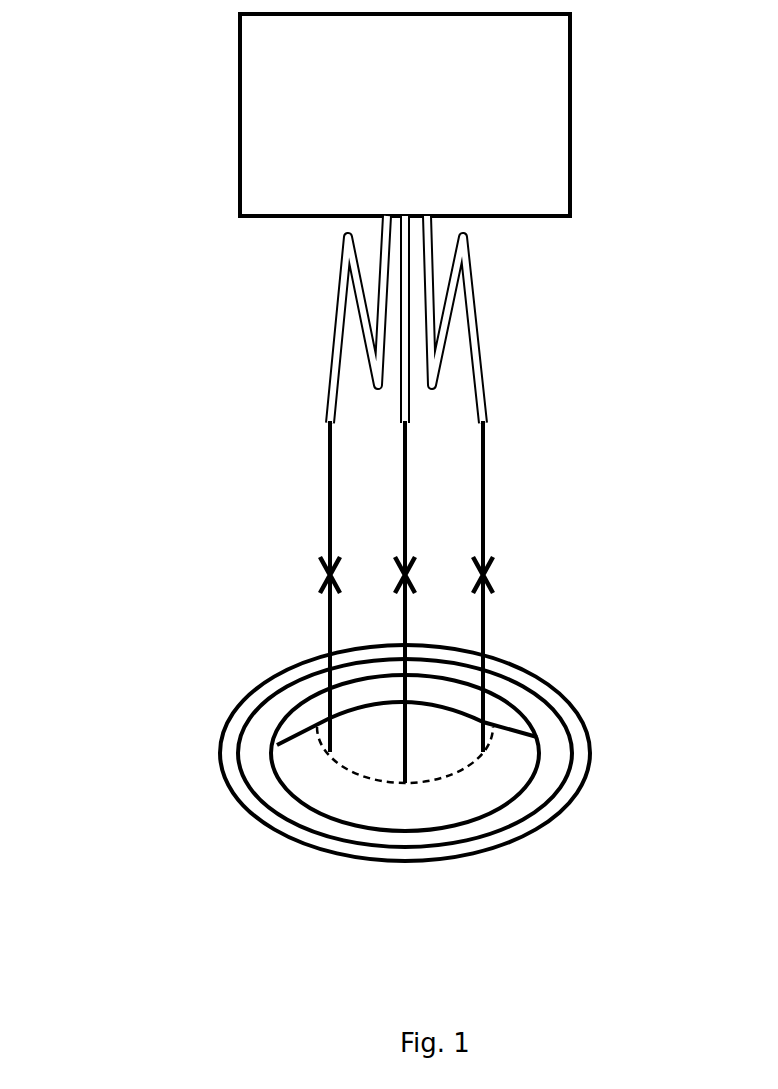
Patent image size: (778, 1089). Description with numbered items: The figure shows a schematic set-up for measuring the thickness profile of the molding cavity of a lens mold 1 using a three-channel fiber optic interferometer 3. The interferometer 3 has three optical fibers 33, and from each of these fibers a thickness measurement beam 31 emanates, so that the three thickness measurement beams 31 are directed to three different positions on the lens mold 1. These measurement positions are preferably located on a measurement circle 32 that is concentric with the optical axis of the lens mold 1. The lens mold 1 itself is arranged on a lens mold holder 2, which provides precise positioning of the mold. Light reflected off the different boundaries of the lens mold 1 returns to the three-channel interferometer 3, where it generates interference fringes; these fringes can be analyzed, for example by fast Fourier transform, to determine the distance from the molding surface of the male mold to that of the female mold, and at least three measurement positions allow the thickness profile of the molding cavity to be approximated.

The lens mold 1 is at (608, 772).
The lens mold holder 2 is at (227, 748).
The three-channel fiber optic interferometer 3 is at (255, 185).
The thickness measurement beams 31 is at (332, 524).
The measurement circle 32 is at (453, 775).
The optical fibers 33 is at (332, 355).